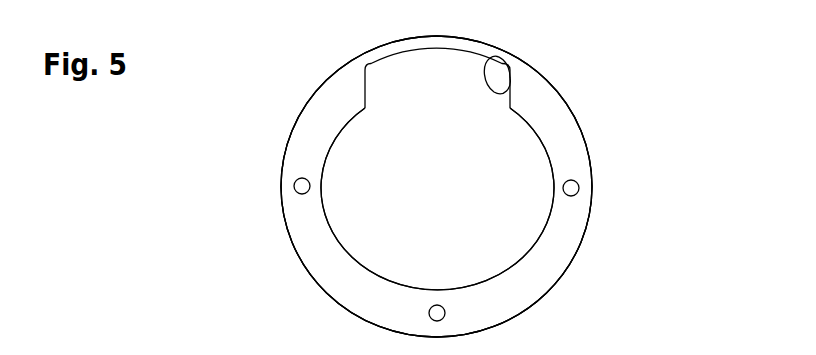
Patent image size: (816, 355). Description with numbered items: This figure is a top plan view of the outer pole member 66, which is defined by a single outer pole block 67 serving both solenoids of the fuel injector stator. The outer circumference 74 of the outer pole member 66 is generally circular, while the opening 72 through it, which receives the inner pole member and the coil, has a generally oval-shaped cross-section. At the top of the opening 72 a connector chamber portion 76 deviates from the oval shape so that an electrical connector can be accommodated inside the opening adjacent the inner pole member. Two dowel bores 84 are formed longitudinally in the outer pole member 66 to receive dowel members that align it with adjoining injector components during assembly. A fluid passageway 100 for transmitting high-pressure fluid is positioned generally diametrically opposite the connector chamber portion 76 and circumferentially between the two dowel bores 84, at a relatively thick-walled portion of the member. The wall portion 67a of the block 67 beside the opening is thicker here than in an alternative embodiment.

The outer pole block 67 is at (601, 96).
The wall portion of the outer pole block 67a is at (592, 208).
The outer circumference 74 is at (304, 266).
The outer pole member 66 is at (364, 291).
The opening 72 is at (513, 267).
The connector chamber portion 76 is at (490, 48).
The dowel bores 84 is at (578, 185).
The fluid passageway 100 is at (445, 314).